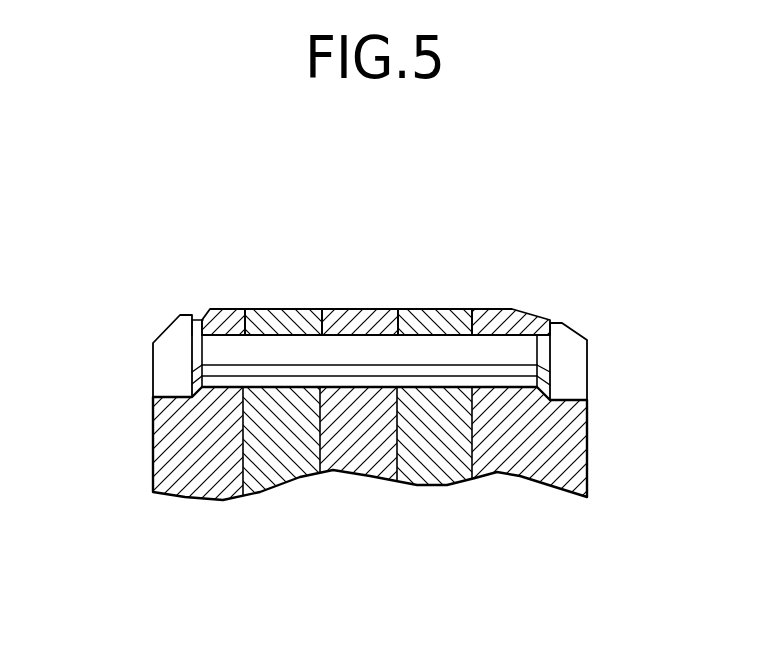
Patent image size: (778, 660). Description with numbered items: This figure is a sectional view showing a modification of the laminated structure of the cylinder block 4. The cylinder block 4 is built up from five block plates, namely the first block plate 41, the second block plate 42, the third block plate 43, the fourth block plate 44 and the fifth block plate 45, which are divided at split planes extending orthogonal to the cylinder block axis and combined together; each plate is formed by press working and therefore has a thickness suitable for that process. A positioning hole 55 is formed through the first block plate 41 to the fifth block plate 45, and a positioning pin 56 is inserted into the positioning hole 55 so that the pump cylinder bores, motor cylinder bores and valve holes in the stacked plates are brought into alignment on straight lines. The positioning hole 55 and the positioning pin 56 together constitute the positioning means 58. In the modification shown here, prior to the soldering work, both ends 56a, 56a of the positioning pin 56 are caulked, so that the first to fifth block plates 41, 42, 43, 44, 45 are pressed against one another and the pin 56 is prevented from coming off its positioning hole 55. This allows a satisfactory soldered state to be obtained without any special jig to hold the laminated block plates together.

The cylinder block 4 is at (381, 399).
The first block plate 41 is at (195, 488).
The second block plate 42 is at (267, 470).
The third block plate 43 is at (350, 458).
The fourth block plate 44 is at (430, 470).
The fifth block plate 45 is at (510, 460).
The positioning hole 55 is at (283, 334).
The positioning pin 56 is at (362, 345).
The end of positioning pin 56a is at (195, 347).
The positioning means 58 is at (578, 373).